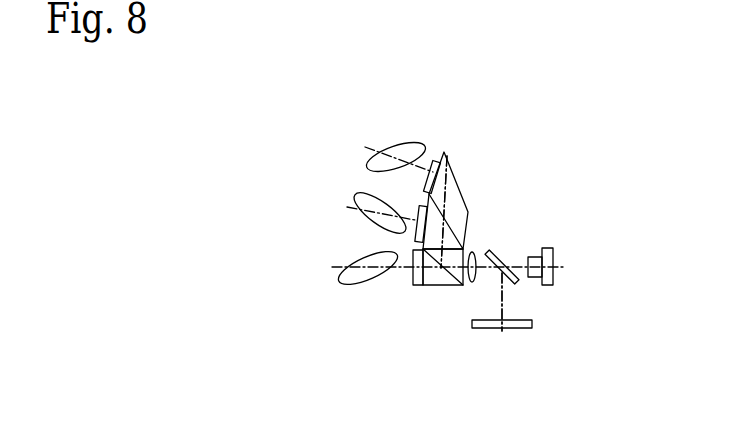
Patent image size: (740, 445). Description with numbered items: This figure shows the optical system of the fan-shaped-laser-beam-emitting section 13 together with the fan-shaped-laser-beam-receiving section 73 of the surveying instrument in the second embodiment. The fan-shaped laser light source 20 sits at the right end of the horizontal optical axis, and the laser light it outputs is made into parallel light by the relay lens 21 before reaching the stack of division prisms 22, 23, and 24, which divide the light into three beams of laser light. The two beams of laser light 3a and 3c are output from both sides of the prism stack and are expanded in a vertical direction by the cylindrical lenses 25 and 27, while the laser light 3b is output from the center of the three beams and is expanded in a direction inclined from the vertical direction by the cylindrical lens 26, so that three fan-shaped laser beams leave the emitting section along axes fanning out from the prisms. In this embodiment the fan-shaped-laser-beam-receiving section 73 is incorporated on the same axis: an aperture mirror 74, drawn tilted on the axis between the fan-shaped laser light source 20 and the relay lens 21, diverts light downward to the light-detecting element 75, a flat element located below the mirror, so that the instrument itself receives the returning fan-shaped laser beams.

The laser light 3a is at (394, 144).
The laser light 3b is at (357, 196).
The laser light 3c is at (348, 263).
The fan-shaped-laser-beam-emitting section 13 is at (527, 190).
The fan-shaped laser light source 20 is at (553, 251).
The relay lens 21 is at (470, 285).
The division prism 22 is at (434, 284).
The division prism 23 is at (458, 239).
The division prism 24 is at (451, 170).
The cylindrical lens 25 is at (413, 280).
The cylindrical lens 26 is at (414, 236).
The cylindrical lens 27 is at (427, 181).
The fan-shaped-laser-beam-receiving section 73 is at (548, 307).
The aperture mirror 74 is at (500, 254).
The light-detecting element 75 is at (501, 329).